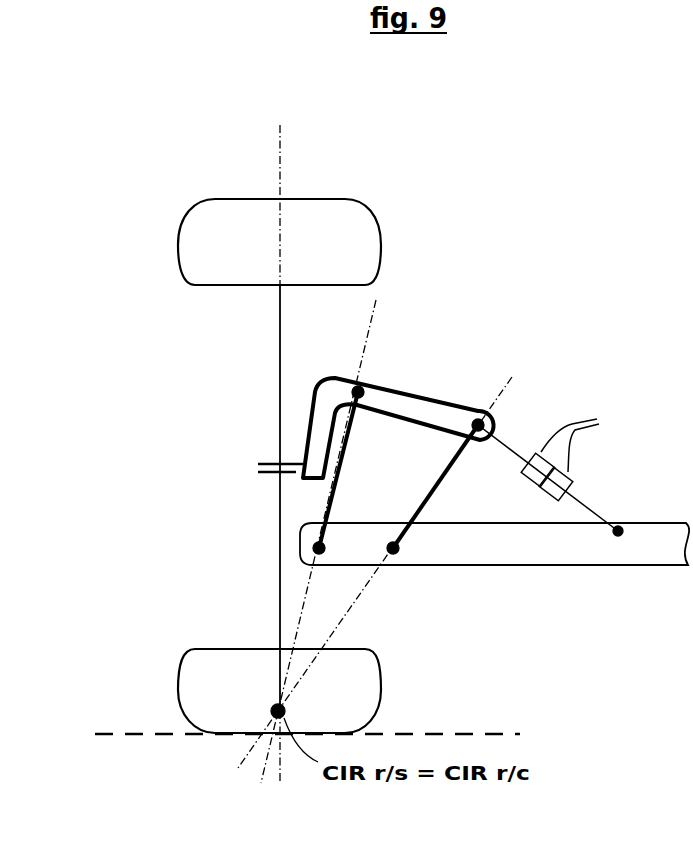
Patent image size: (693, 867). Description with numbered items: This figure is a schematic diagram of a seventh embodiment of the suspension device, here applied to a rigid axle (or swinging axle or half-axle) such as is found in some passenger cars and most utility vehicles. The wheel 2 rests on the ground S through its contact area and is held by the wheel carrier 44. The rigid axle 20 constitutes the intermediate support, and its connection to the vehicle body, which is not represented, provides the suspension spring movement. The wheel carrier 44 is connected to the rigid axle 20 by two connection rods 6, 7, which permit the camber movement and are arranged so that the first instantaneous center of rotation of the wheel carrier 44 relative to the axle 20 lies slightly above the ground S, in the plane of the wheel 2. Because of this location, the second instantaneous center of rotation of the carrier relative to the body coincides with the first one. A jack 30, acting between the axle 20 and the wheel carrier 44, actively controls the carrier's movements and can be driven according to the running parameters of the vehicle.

The wheel 2 is at (278, 593).
The connection rod 6 is at (336, 481).
The connection rod 7 is at (450, 468).
The rigid axle 20 is at (572, 557).
The jack 30 is at (629, 453).
The wheel carrier 44 is at (415, 390).
The ground S is at (462, 732).